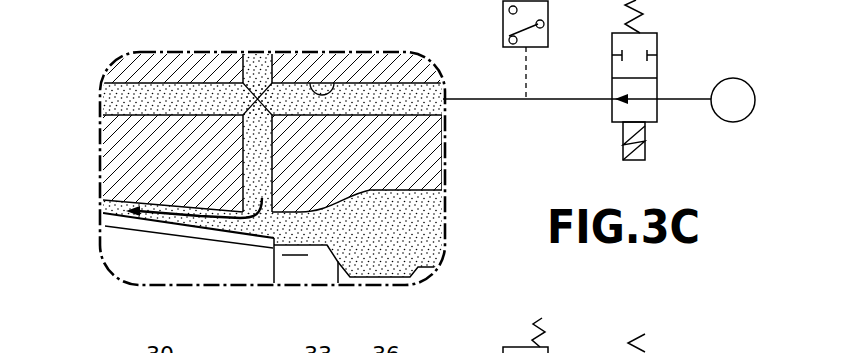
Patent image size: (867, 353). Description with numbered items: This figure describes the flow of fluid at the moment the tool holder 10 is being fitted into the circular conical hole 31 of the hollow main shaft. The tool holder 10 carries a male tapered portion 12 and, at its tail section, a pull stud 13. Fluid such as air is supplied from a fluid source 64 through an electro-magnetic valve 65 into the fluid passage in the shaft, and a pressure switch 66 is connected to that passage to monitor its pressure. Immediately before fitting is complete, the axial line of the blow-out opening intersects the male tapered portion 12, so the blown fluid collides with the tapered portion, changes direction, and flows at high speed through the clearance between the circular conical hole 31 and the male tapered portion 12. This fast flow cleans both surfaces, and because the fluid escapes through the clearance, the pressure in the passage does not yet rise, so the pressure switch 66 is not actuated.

The tool holder 10 is at (132, 277).
The male tapered portion 12 is at (117, 232).
The pull stud 13 is at (373, 267).
The circular conical hole 31 is at (100, 207).
The fluid source 64 is at (733, 98).
The electro-magnetic valve 65 is at (612, 112).
The pressure switch 66 is at (503, 17).